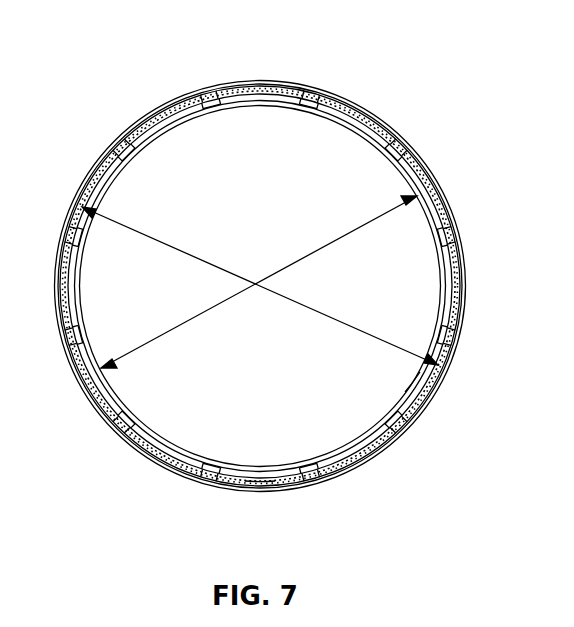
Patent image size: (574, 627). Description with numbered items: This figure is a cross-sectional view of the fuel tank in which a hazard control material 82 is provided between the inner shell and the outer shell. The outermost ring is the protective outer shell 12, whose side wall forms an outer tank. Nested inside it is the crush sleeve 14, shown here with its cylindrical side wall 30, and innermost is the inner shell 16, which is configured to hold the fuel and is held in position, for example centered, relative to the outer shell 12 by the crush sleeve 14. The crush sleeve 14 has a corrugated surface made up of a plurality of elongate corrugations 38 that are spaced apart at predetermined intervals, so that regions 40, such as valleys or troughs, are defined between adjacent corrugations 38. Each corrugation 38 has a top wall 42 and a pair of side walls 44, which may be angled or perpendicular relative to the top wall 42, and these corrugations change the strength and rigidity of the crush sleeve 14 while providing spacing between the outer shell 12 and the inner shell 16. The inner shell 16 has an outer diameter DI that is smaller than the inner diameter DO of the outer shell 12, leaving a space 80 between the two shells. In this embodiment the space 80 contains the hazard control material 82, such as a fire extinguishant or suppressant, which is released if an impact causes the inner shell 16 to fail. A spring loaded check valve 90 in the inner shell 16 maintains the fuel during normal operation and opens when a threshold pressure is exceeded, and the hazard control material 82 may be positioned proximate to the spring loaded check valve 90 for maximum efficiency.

The protective outer shell 12 is at (445, 222).
The crush sleeve 14 is at (453, 282).
The inner shell 16 is at (296, 112).
The cylindrical side wall 30 is at (358, 115).
The corrugations 38 is at (207, 92).
The regions 40 is at (415, 183).
The top wall 42 is at (120, 434).
The side walls 44 is at (108, 409).
The space 80 is at (425, 378).
The hazard control material 82 is at (420, 178).
The spring loaded check valve 90 is at (258, 492).
The inner diameter of the outer shell DO is at (148, 240).
The outer diameter of the inner shell DI is at (190, 326).